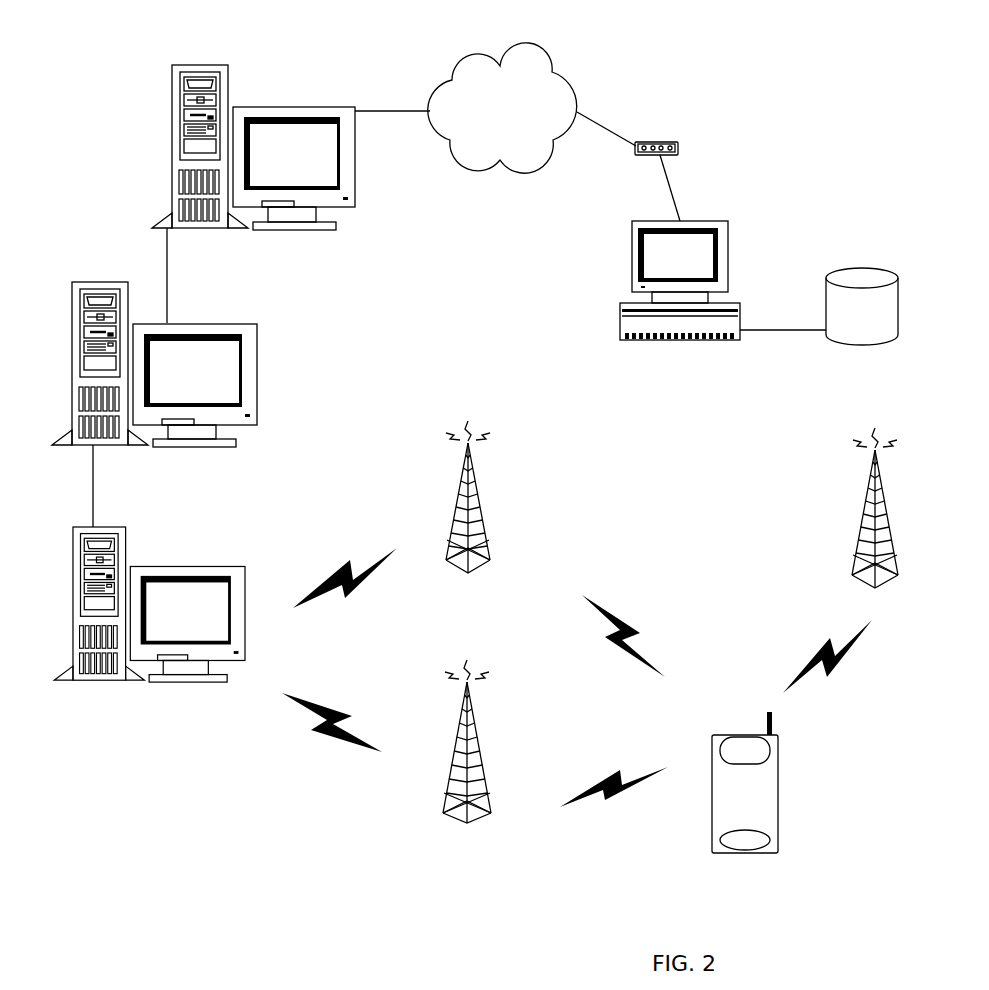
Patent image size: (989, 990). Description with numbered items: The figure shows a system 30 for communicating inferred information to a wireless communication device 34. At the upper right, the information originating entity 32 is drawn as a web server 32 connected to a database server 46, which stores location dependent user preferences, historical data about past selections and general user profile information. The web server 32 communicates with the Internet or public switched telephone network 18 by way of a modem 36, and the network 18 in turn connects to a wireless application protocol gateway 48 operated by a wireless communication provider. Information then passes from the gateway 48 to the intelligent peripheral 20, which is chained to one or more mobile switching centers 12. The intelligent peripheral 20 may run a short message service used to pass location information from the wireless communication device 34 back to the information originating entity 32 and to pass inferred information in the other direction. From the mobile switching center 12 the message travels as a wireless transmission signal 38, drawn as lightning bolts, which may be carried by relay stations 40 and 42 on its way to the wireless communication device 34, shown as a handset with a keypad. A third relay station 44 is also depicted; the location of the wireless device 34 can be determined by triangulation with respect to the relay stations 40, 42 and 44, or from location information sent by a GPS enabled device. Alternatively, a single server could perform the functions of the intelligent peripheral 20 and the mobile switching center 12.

The mobile switching center 12 is at (190, 567).
The public switched telephone network 18 is at (553, 70).
The intelligent peripheral 20 is at (258, 407).
The system 30 is at (784, 107).
The information originating entity 32 is at (728, 254).
The wireless communication device 34 is at (778, 795).
The modem 36 is at (660, 141).
The wireless transmission signal 38 is at (345, 565).
The relay station 40 is at (491, 813).
The relay station 42 is at (490, 560).
The relay station 44 is at (868, 511).
The database server 46 is at (865, 269).
The wireless application protocol gateway 48 is at (355, 185).